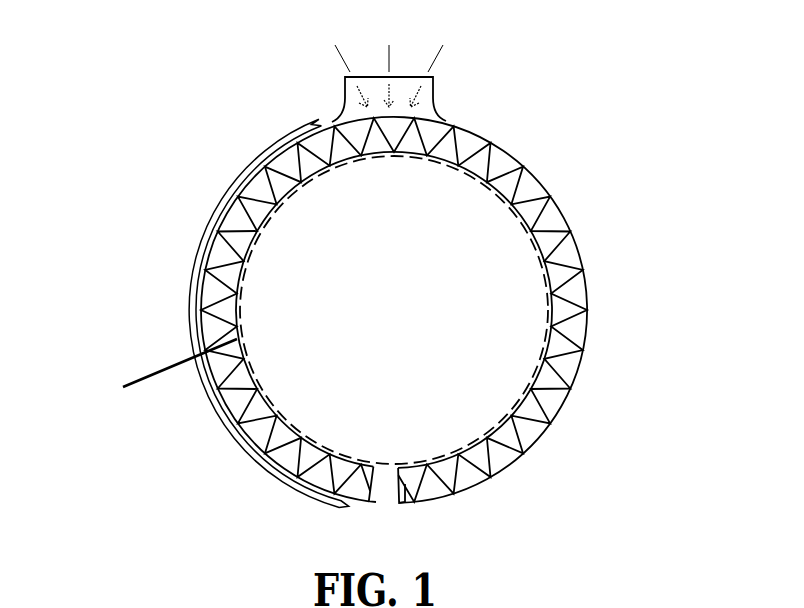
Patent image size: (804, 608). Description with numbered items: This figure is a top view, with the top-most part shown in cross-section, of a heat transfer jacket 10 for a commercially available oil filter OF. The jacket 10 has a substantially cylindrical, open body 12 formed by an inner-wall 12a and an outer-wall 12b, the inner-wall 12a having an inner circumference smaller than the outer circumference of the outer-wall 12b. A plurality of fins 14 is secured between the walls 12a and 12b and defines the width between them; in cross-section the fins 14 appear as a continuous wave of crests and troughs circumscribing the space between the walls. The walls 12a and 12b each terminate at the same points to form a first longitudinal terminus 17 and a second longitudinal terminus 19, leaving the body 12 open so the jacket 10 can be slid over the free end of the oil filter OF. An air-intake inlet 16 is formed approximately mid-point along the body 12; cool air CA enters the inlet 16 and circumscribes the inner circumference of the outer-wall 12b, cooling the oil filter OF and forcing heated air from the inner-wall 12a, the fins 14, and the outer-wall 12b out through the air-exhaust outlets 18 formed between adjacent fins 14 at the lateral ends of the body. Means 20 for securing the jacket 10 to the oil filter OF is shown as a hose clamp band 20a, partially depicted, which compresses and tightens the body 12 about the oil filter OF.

The heat transfer jacket 10 is at (613, 73).
The body 12 is at (543, 166).
The inner-wall 12a is at (300, 180).
The outer-wall 12b is at (250, 180).
The fins 14 is at (562, 228).
The air-intake inlet 16 is at (436, 98).
The first longitudinal terminus 17 is at (380, 503).
The air-exhaust outlets 18 is at (572, 335).
The second longitudinal terminus 19 is at (396, 502).
The means for securing the jacket 20 is at (203, 240).
The hose clamp band 20a is at (269, 313).
The cool air CA is at (389, 42).
The oil filter OF is at (160, 376).